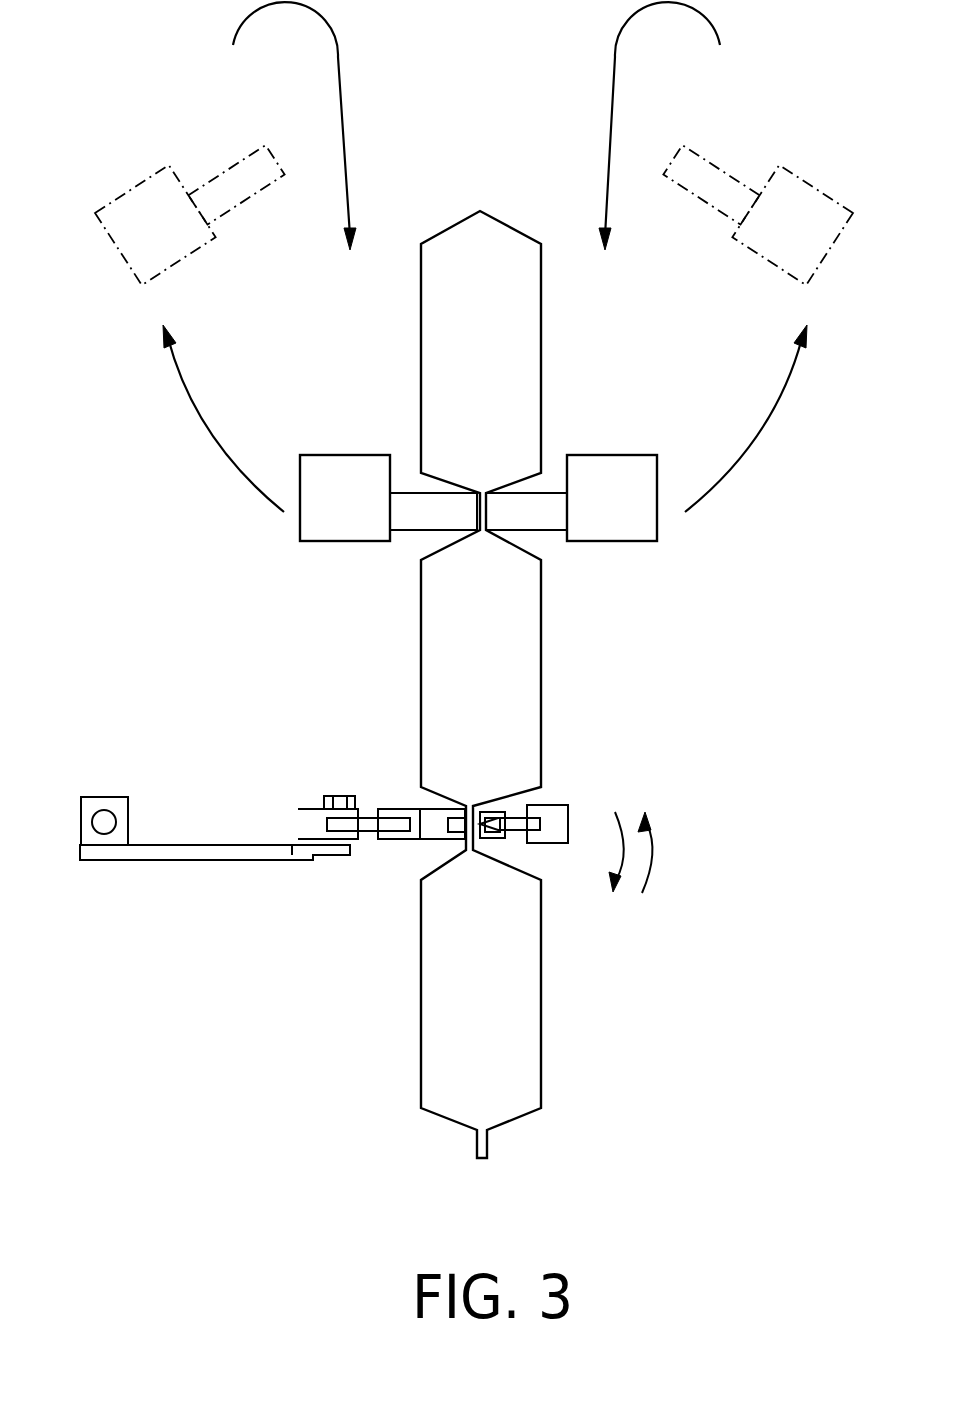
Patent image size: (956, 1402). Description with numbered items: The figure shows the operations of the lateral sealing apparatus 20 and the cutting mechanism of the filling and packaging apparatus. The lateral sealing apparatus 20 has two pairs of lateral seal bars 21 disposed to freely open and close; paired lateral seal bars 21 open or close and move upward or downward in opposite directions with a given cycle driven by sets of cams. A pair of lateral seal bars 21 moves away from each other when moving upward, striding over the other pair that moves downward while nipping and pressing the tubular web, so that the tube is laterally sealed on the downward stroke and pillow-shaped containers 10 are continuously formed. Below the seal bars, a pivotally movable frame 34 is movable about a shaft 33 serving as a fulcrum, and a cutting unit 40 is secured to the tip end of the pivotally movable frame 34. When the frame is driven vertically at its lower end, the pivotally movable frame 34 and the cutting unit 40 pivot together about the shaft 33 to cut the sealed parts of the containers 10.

The pillow-shaped container 10 is at (541, 993).
The lateral sealing apparatus 20 is at (352, 448).
The lateral seal bar 21 is at (638, 457).
The shaft 33 is at (100, 810).
The pivotally movable frame 34 is at (203, 860).
The cutting unit 40 is at (353, 743).